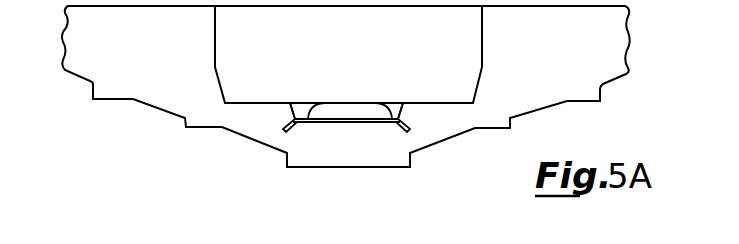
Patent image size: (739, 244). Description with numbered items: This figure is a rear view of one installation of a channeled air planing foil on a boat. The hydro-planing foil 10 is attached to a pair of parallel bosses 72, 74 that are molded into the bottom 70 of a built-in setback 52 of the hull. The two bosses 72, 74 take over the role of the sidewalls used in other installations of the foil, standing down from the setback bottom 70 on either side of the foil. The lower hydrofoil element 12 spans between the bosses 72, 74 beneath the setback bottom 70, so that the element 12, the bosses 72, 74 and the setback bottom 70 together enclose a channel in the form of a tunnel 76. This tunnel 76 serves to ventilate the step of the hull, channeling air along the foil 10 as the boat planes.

The hydro-planing foil 10 is at (342, 133).
The lower hydrofoil element 12 is at (314, 124).
The built-in setback 52 is at (441, 53).
The bottom of the setback 70 is at (332, 104).
The boss 72 is at (290, 107).
The boss 74 is at (403, 107).
The tunnel 76 is at (353, 111).